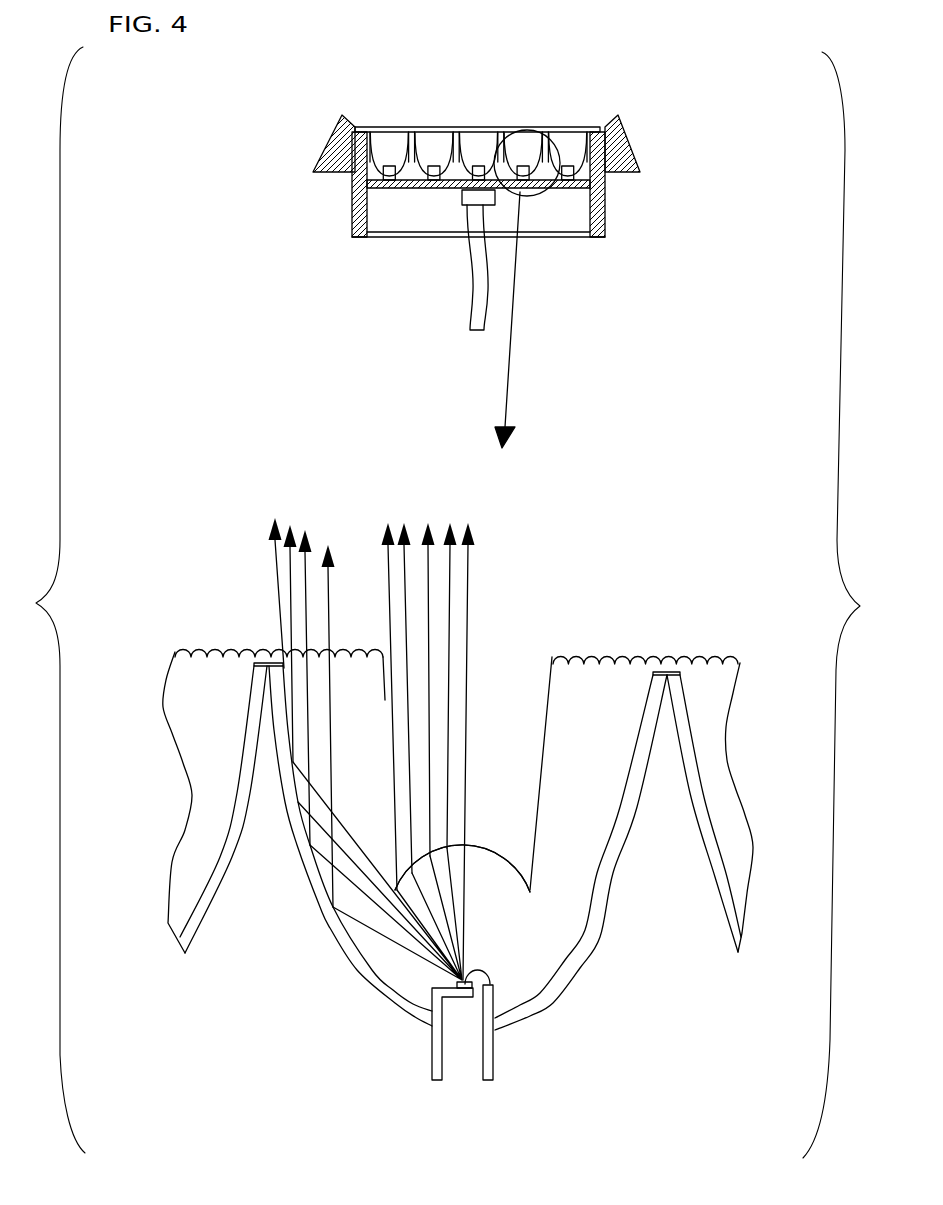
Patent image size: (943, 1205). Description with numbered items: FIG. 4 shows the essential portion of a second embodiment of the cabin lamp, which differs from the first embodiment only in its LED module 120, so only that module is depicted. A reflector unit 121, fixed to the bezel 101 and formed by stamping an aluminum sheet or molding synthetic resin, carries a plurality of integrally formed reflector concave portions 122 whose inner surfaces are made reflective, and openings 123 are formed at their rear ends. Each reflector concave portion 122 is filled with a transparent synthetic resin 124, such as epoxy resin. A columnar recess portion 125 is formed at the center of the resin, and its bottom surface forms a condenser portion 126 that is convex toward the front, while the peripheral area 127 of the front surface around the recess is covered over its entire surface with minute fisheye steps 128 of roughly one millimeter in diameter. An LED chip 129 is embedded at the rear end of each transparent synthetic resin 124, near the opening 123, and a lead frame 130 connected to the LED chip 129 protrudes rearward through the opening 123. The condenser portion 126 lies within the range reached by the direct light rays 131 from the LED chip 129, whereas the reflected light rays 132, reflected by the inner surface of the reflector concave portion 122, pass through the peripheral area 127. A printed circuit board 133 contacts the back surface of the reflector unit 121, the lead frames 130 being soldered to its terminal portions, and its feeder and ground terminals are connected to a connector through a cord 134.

The bezel 101 is at (342, 155).
The LED module 120 is at (668, 106).
The reflector unit 121 is at (383, 130).
The reflector concave portion 122 is at (405, 135).
The opening 123 is at (425, 1028).
The transparent synthetic resin 124 is at (448, 133).
The recess portion 125 is at (547, 702).
The condenser portion 126 is at (487, 840).
The peripheral area 127 is at (343, 652).
The fisheye steps 128 is at (360, 652).
The LED chip 129 is at (577, 175).
The lead frame 130 is at (437, 1072).
The direct light rays 131 is at (450, 882).
The reflected light rays 132 is at (307, 728).
The printed circuit board 133 is at (555, 190).
The cord 134 is at (473, 307).